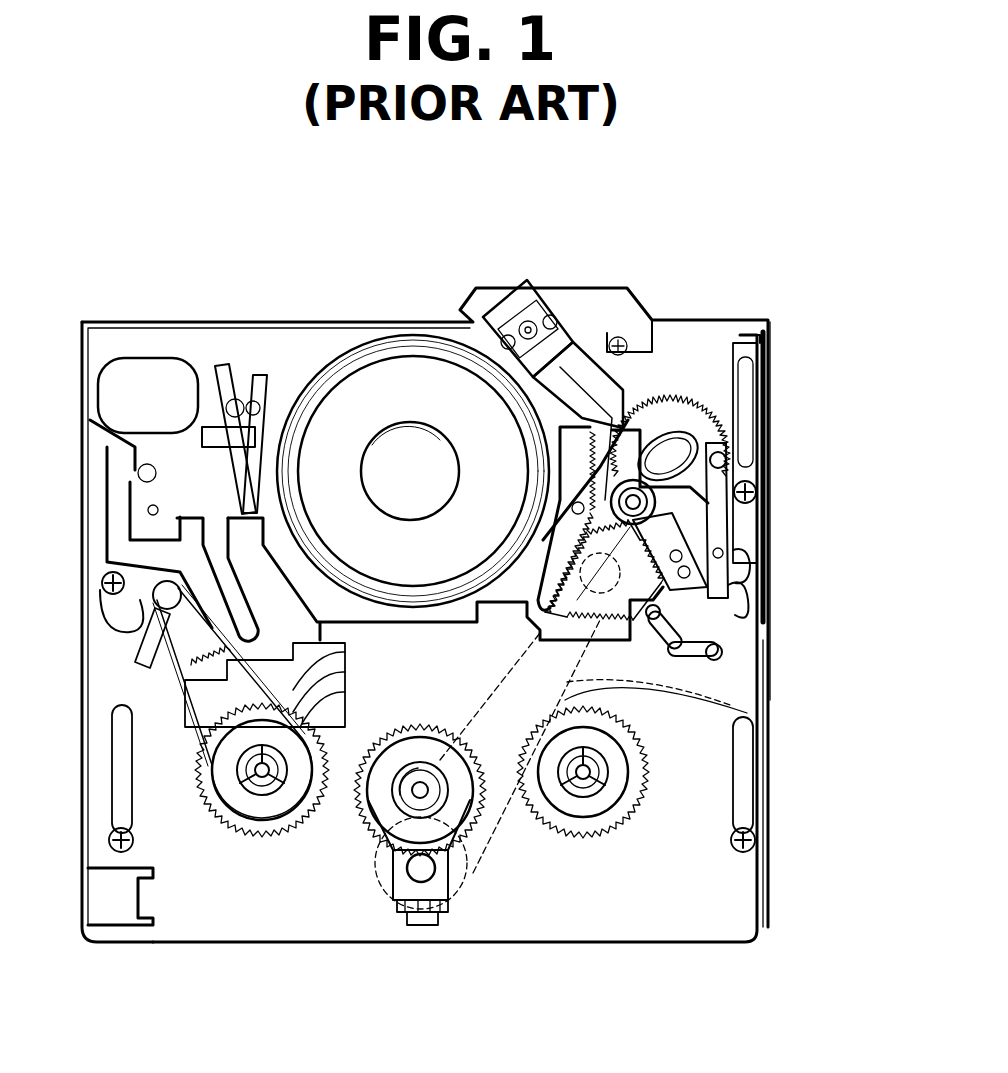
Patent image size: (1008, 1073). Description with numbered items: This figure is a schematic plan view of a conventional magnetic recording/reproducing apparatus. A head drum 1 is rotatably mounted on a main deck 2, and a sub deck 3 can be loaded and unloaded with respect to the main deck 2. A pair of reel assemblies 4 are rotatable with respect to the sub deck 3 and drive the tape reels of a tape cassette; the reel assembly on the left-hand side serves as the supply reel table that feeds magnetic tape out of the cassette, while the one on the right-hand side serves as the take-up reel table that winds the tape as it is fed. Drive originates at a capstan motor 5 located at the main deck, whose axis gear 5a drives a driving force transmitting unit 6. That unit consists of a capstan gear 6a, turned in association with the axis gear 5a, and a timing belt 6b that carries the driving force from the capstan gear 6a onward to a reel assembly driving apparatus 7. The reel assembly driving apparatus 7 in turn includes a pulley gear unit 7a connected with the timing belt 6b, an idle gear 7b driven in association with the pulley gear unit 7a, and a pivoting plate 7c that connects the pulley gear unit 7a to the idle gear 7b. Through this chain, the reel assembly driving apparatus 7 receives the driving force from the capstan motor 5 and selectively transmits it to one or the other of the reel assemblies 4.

The head drum 1 is at (374, 340).
The main deck 2 is at (290, 340).
The sub deck 3 is at (690, 925).
The reel assemblies 4 is at (255, 822).
The capstan motor 5 is at (700, 408).
The axis gear 5a is at (712, 535).
The driving force transmitting unit 6 is at (728, 668).
The capstan gear 6a is at (727, 620).
The timing belt 6b is at (709, 705).
The reel assembly driving apparatus 7 is at (454, 830).
The pulley gear unit 7a is at (457, 887).
The idle gear 7b is at (322, 822).
The pivoting plate 7c is at (350, 805).